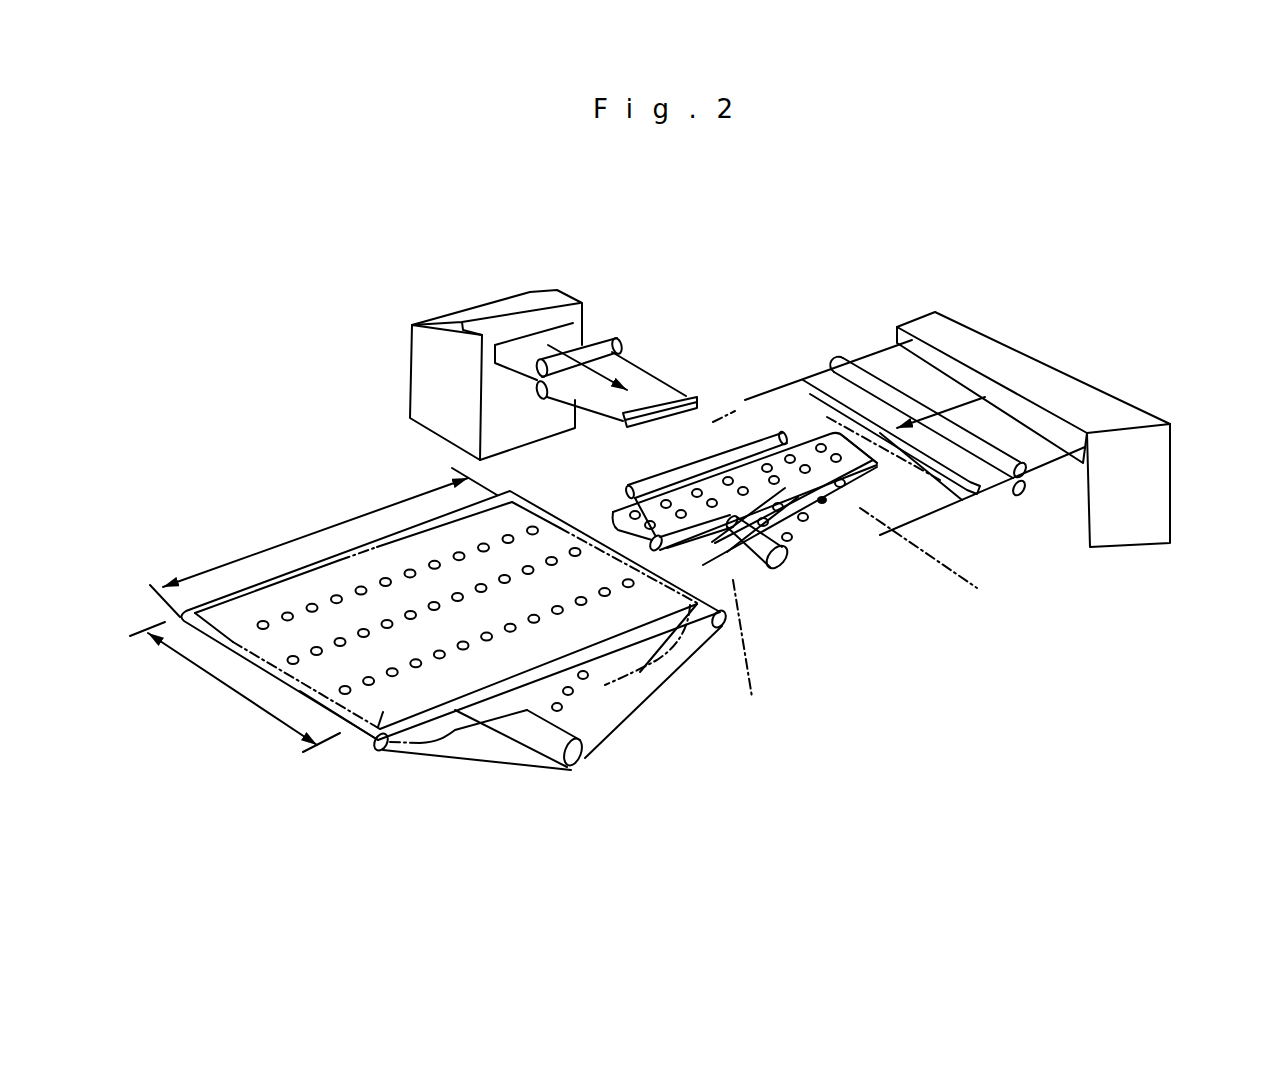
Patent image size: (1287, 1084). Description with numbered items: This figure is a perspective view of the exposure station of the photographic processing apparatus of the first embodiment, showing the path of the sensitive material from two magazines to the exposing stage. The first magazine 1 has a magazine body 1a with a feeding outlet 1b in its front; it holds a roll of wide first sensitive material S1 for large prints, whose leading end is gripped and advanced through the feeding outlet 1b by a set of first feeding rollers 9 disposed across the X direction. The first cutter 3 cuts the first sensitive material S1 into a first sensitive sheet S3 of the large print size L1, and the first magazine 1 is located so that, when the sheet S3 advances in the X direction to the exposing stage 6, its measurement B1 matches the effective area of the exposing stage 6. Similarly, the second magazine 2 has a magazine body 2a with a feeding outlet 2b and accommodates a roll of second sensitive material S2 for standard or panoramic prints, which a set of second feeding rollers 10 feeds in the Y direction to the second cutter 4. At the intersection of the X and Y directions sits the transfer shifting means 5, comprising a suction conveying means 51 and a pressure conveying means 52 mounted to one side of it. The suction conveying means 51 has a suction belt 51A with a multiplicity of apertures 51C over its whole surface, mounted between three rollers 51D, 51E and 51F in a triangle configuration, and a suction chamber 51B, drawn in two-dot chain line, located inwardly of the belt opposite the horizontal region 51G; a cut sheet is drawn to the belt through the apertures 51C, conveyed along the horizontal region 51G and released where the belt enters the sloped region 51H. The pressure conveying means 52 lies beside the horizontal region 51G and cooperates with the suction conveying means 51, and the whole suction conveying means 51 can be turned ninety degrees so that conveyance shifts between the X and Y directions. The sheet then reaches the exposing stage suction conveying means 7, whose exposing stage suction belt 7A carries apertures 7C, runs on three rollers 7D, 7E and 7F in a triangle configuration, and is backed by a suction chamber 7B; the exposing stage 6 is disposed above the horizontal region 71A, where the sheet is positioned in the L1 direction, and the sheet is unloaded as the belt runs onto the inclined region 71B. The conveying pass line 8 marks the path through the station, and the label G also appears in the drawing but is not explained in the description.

The first magazine 1 is at (1196, 330).
The magazine body 1a is at (1077, 390).
The feeding outlet 1b is at (1083, 458).
The second magazine 2 is at (653, 236).
The magazine body 2a is at (543, 292).
The feeding outlet 2b is at (570, 333).
The first cutter 3 is at (979, 494).
The second cutter 4 is at (687, 397).
The transfer shifting means 5 is at (850, 540).
The exposing stage 6 is at (317, 577).
The exposing stage suction conveying means 7 is at (455, 770).
The exposing stage suction belt 7A is at (353, 710).
The suction chamber 7B is at (641, 695).
The apertures 7C is at (508, 536).
The roller 7D is at (571, 768).
The roller 7E is at (725, 633).
The roller 7F is at (383, 753).
The conveying pass line 8 is at (147, 743).
The first feeding rollers 9 is at (1023, 494).
The second feeding rollers 10 is at (613, 350).
The suction conveying means 51 is at (826, 502).
The suction belt 51A is at (841, 524).
The suction chamber 51B is at (716, 566).
The apertures 51C is at (818, 445).
The roller 51D is at (784, 568).
The roller 51E is at (879, 470).
The roller 51F is at (626, 488).
The horizontal region 51G is at (868, 472).
The sloped region 51H is at (706, 582).
The pressure conveying means 52 is at (735, 452).
The horizontal region 71A is at (383, 700).
The inclined region 71B is at (495, 752).
The gap G is at (748, 600).
The first sensitive material S1 is at (893, 360).
The second sensitive material S2 is at (565, 343).
The first sensitive sheet S3 is at (956, 520).
The X direction X is at (941, 404).
The Y direction Y is at (587, 368).
The large print size L1 is at (323, 542).
The width measurement B1 is at (235, 687).